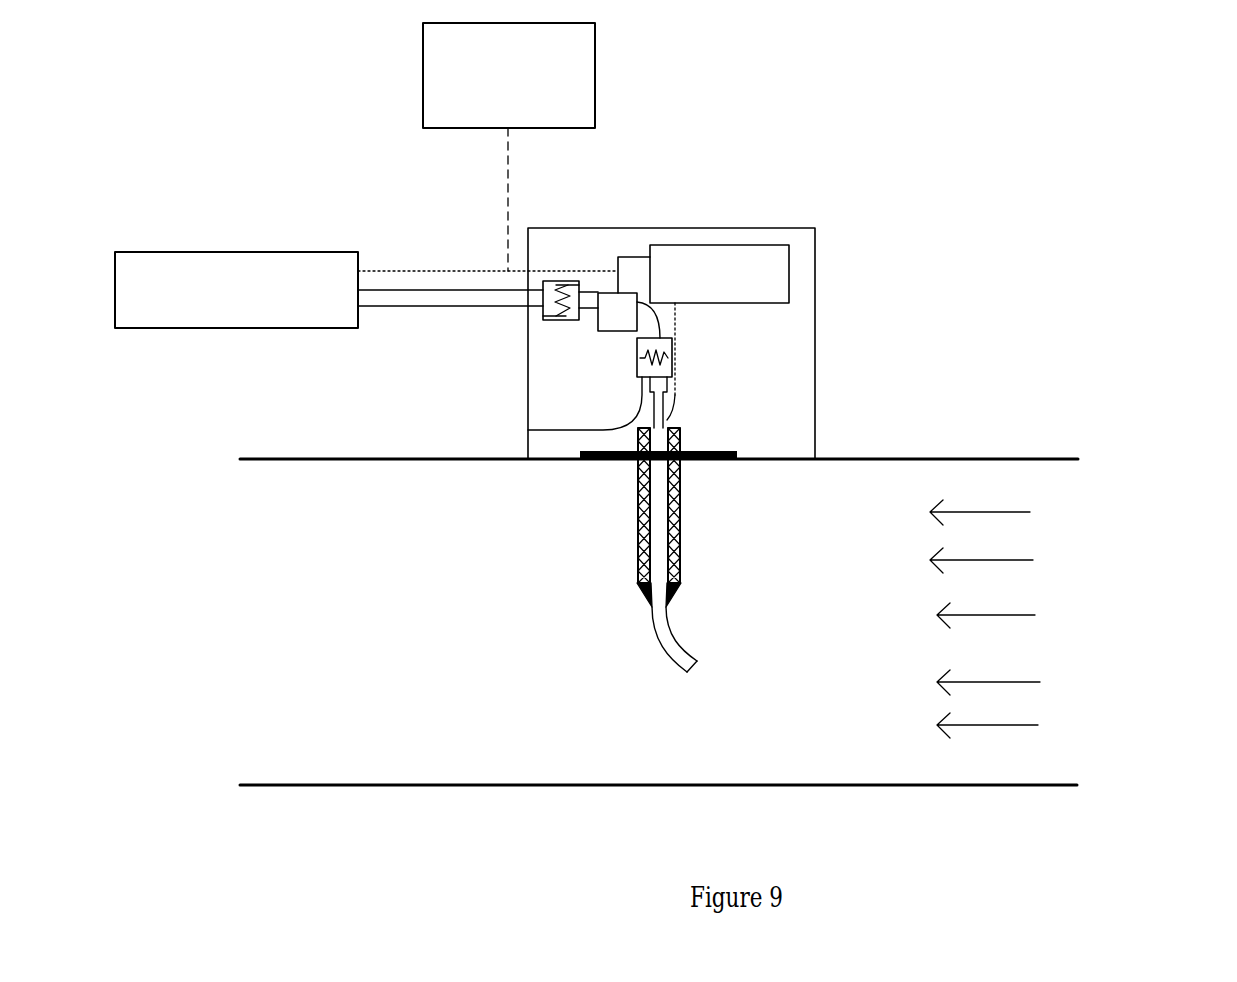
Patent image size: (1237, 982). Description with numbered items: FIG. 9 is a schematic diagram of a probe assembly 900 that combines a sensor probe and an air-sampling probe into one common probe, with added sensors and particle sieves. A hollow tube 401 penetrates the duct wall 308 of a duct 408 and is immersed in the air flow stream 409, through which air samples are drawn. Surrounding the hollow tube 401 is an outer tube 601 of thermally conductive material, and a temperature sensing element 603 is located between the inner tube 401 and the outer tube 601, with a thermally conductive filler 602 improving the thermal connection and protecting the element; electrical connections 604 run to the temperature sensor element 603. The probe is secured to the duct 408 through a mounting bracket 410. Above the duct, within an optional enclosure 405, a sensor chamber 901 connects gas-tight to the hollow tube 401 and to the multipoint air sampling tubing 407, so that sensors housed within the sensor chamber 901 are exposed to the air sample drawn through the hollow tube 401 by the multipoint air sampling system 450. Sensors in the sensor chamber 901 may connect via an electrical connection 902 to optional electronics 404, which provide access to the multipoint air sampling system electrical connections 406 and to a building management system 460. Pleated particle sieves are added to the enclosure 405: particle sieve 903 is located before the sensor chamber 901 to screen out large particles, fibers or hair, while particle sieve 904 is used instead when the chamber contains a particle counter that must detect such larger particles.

The building management system 460 is at (509, 75).
The probe assembly 900 is at (667, 135).
The multipoint air sampling system electrical connections 406 is at (473, 271).
The multipoint air sampling system 450 is at (236, 290).
The multipoint air sampling tubing 407 is at (493, 306).
The optional enclosure 405 is at (947, 173).
The optional electronics 404 is at (719, 274).
The electrical connection 902 is at (640, 256).
The particle sieve 904 is at (550, 320).
The sensor chamber 901 is at (608, 293).
The particle sieve 903 is at (528, 430).
The mounting bracket 410 is at (607, 447).
The electrical connections to temperature sensor element 604 is at (690, 385).
The duct wall 308 is at (938, 445).
The outer tube 601 is at (680, 528).
The thermally conductive filler 602 is at (680, 547).
The temperature sensing element 603 is at (647, 603).
The hollow tube 401 is at (663, 658).
The air flow stream 409 is at (1068, 619).
The duct 408 is at (1047, 784).